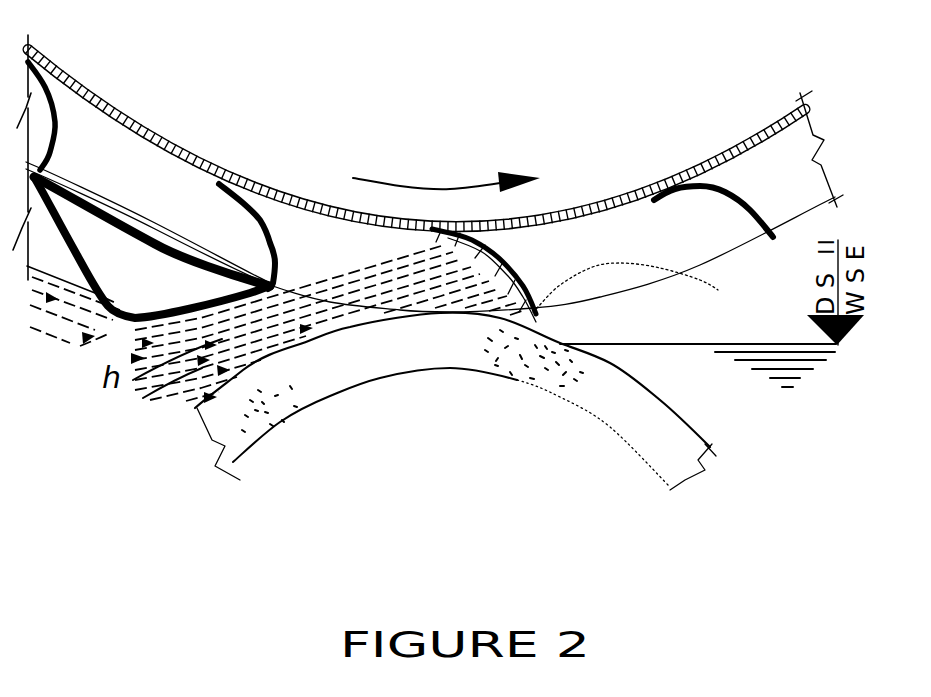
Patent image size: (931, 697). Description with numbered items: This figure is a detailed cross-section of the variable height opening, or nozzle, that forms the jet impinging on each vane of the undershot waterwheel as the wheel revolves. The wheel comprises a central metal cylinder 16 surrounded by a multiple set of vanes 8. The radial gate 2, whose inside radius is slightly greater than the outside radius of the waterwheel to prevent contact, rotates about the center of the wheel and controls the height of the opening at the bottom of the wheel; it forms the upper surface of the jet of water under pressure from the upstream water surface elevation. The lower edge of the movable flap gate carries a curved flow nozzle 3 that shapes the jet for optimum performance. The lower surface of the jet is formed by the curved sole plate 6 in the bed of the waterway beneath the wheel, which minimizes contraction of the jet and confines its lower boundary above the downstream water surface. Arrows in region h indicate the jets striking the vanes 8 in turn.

The radial gate 2 is at (180, 267).
The curved flow nozzle 3 is at (127, 313).
The sole plate 6 is at (643, 458).
The vanes 8 is at (745, 200).
The central metal cylinder 16 is at (743, 140).